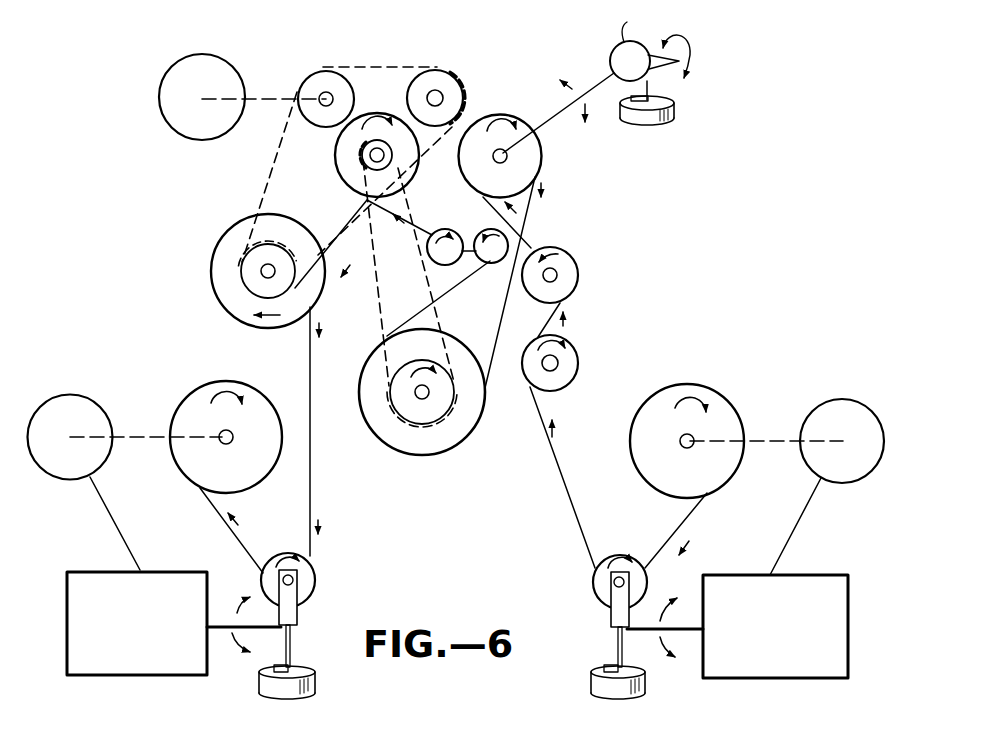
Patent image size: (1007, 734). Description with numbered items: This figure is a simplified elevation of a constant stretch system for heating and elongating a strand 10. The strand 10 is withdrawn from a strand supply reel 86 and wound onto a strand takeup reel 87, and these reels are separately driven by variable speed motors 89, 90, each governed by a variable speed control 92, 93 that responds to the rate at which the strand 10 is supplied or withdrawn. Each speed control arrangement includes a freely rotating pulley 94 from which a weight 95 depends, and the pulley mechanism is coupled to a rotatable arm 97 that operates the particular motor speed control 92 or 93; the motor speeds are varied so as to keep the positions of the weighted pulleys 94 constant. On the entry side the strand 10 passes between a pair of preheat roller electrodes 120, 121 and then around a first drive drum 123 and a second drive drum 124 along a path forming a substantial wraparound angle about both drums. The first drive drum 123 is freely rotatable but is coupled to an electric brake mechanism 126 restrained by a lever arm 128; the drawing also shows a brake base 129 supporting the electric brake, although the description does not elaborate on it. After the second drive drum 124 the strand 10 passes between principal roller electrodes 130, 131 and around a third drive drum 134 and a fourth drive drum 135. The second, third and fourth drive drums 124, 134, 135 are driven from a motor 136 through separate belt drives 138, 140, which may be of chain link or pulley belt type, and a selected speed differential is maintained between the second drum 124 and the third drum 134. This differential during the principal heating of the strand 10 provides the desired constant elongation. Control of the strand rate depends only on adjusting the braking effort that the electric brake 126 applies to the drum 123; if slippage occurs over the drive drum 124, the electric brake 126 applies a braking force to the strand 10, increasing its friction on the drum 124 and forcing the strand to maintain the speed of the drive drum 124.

The strand 10 is at (559, 464).
The strand supply reel 86 is at (638, 412).
The strand takeup reel 87 is at (272, 406).
The variable speed motor 89 is at (812, 411).
The variable speed motor 90 is at (101, 407).
The variable speed control 92 is at (737, 680).
The variable speed control 93 is at (182, 678).
The freely rotating pulley 94 is at (316, 568).
The weight 95 is at (260, 689).
The rotatable arm 97 is at (455, 627).
The preheat roller electrode 120 is at (577, 348).
The preheat roller electrode 121 is at (578, 277).
The first drive drum 123 is at (543, 159).
The second drive drum 124 is at (376, 441).
The electric brake mechanism 126 is at (615, 47).
The lever arm 128 is at (695, 56).
The brake base 129 is at (674, 109).
The principal roller electrode 130 is at (492, 264).
The principal roller electrode 131 is at (433, 230).
The third drive drum 134 is at (413, 178).
The fourth drive drum 135 is at (238, 222).
The motor 136 is at (229, 63).
The belt drive 138 is at (388, 66).
The belt drive 140 is at (378, 318).